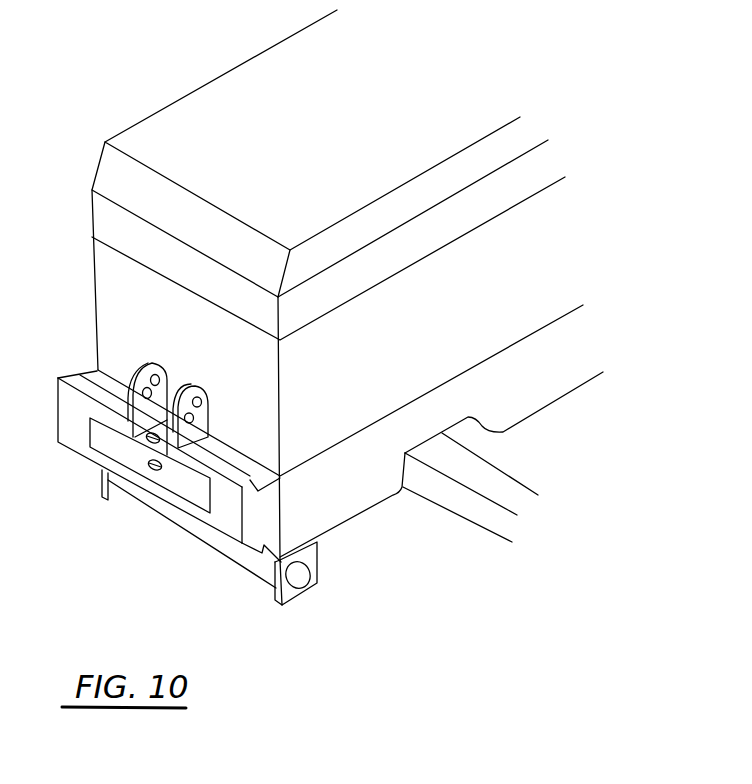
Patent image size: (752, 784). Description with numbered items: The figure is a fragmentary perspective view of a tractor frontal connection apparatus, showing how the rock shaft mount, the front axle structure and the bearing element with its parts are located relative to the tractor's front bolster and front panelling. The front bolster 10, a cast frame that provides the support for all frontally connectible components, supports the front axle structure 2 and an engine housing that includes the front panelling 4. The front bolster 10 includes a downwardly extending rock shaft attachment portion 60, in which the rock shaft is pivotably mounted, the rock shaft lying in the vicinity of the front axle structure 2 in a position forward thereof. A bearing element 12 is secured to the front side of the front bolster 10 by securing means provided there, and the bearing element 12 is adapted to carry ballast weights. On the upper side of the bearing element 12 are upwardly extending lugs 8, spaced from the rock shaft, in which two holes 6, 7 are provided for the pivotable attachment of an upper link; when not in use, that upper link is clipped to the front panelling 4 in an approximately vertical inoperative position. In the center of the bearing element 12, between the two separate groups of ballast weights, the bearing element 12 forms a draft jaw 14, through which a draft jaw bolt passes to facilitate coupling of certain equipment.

The front axle structure 2 is at (502, 523).
The front panelling 4 is at (108, 298).
The hole 6 is at (202, 402).
The hole 7 is at (193, 418).
The lug 8 is at (135, 383).
The front bolster 10 is at (370, 500).
The bearing element 12 is at (228, 517).
The draft jaw 14 is at (115, 437).
The rock shaft attachment portion 60 is at (316, 557).